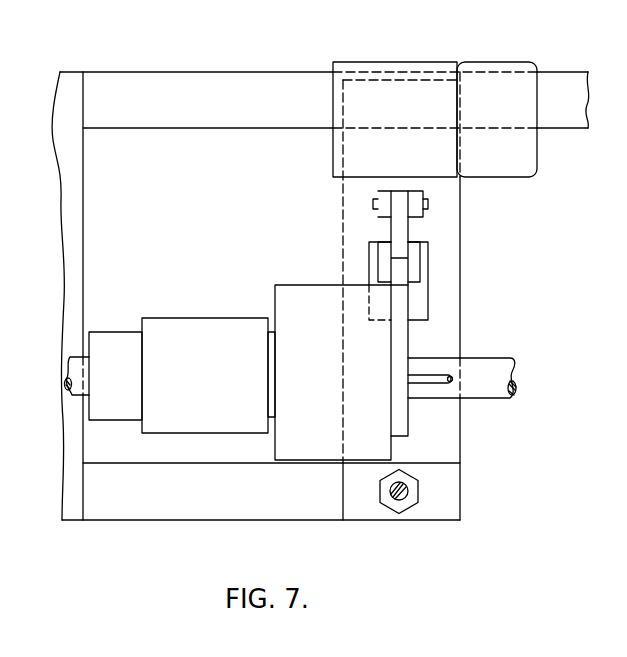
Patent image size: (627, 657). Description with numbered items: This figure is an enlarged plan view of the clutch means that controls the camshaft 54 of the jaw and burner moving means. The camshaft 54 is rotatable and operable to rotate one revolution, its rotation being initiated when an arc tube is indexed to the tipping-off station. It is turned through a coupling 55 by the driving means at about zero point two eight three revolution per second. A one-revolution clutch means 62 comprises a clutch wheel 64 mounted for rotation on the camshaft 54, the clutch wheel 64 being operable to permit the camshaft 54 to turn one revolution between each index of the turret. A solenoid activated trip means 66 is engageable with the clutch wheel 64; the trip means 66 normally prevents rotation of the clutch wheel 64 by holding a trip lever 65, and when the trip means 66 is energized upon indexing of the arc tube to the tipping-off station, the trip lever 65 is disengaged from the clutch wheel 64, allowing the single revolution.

The camshaft 54 is at (483, 387).
The coupling 55 is at (202, 318).
The one-revolution clutch means 62 is at (412, 343).
The clutch wheel 64 is at (403, 305).
The trip lever 65 is at (403, 272).
The solenoid activated trip means 66 is at (395, 92).